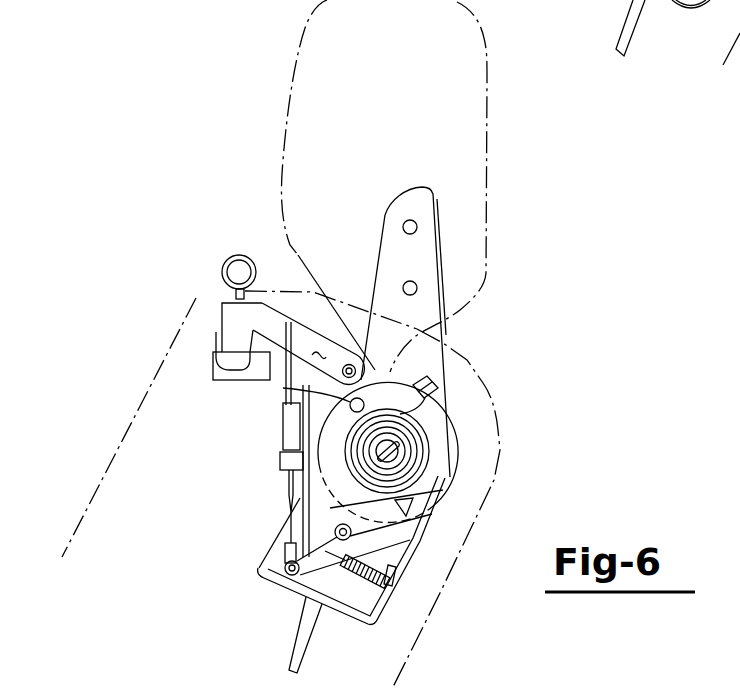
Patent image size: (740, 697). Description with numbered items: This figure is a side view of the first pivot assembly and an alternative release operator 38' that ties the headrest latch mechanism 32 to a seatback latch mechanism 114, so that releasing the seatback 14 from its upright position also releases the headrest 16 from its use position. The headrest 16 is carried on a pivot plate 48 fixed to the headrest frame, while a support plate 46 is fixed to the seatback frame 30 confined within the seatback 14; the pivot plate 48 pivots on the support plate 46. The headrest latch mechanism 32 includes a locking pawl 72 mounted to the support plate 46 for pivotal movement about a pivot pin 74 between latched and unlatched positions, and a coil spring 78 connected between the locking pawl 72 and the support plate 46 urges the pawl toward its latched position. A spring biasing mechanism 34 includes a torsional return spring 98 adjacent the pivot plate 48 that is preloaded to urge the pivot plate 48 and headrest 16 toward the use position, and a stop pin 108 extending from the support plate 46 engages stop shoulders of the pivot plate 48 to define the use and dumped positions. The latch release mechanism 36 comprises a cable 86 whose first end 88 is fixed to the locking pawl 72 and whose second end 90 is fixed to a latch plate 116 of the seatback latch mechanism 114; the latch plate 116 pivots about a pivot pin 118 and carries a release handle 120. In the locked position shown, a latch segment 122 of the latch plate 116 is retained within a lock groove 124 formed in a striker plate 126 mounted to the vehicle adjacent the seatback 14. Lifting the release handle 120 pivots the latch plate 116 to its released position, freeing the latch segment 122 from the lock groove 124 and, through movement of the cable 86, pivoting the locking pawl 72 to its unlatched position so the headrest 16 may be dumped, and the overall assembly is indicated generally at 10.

The seat assembly 10 is at (615, 223).
The seatback 14 is at (152, 540).
The headrest 16 is at (417, 78).
The seatback frame 30 is at (333, 598).
The headrest latch mechanism 32 is at (262, 565).
The spring biasing mechanism 34 is at (443, 442).
The latch release mechanism 36 is at (272, 459).
The release operator 38' is at (151, 241).
The support plate 46 is at (448, 514).
The pivot plate 48 is at (458, 272).
The locking pawl 72 is at (372, 529).
The pivot pin 74 is at (335, 532).
The coil spring 78 is at (366, 560).
The cable 86 is at (284, 403).
The first end 88 is at (290, 571).
The second end 90 is at (307, 332).
The torsional return spring 98 is at (420, 496).
The stop pin 108 is at (284, 386).
The seatback latch mechanism 114 is at (204, 325).
The latch plate 116 is at (320, 348).
The pivot pin 118 is at (360, 360).
The release handle 120 is at (257, 269).
The latch segment 122 is at (216, 349).
The lock groove 124 is at (213, 372).
The striker plate 126 is at (213, 376).